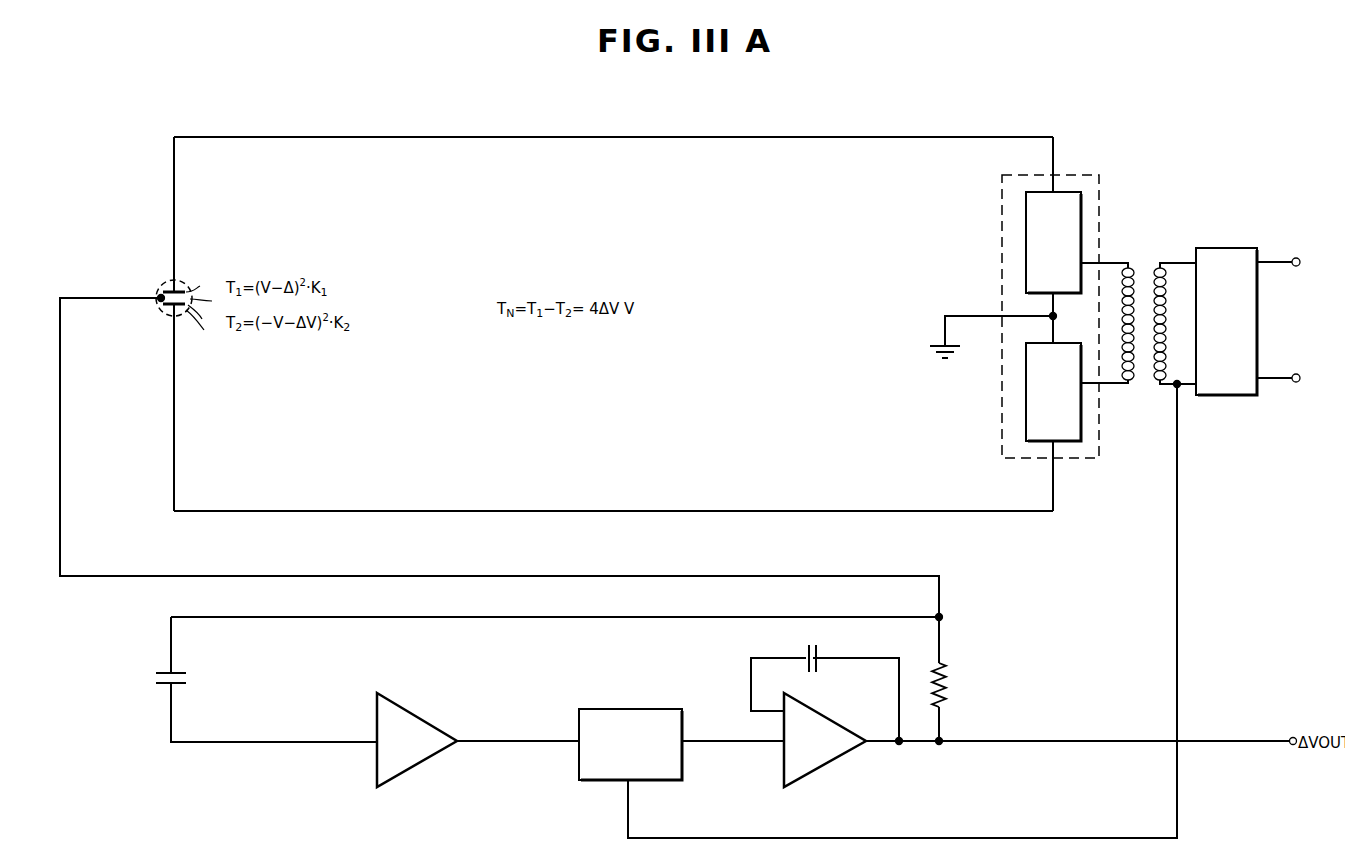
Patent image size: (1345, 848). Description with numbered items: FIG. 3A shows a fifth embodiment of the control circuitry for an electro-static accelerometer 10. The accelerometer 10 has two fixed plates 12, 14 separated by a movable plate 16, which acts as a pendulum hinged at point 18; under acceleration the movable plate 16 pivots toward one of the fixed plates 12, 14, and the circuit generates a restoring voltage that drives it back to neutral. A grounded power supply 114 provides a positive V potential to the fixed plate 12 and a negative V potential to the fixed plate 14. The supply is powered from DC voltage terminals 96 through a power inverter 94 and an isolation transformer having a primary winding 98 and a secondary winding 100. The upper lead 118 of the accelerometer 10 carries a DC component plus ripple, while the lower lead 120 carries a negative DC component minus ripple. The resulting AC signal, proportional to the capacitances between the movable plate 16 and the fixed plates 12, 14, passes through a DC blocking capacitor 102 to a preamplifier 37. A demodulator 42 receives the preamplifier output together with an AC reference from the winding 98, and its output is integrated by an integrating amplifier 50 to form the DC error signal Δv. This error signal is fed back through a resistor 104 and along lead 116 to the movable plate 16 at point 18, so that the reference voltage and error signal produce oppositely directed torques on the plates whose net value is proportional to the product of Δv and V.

The electro-static accelerometer 10 is at (157, 268).
The fixed plate 12 is at (185, 288).
The fixed plate 14 is at (183, 315).
The movable plate 16 is at (164, 307).
The hinge point 18 is at (155, 293).
The preamplifier 37 is at (425, 718).
The demodulator 42 is at (682, 781).
The integrating amplifier 50 is at (910, 726).
The power inverter 94 is at (1222, 248).
The DC voltage terminals 96 is at (1278, 270).
The primary winding 98 is at (1163, 262).
The secondary winding 100 is at (1128, 385).
The DC blocking capacitor 102 is at (151, 678).
The resistor 104 is at (948, 679).
The power supply 114 is at (1102, 170).
The lead 116 is at (503, 576).
The upper lead 118 is at (745, 137).
The lower lead 120 is at (831, 513).